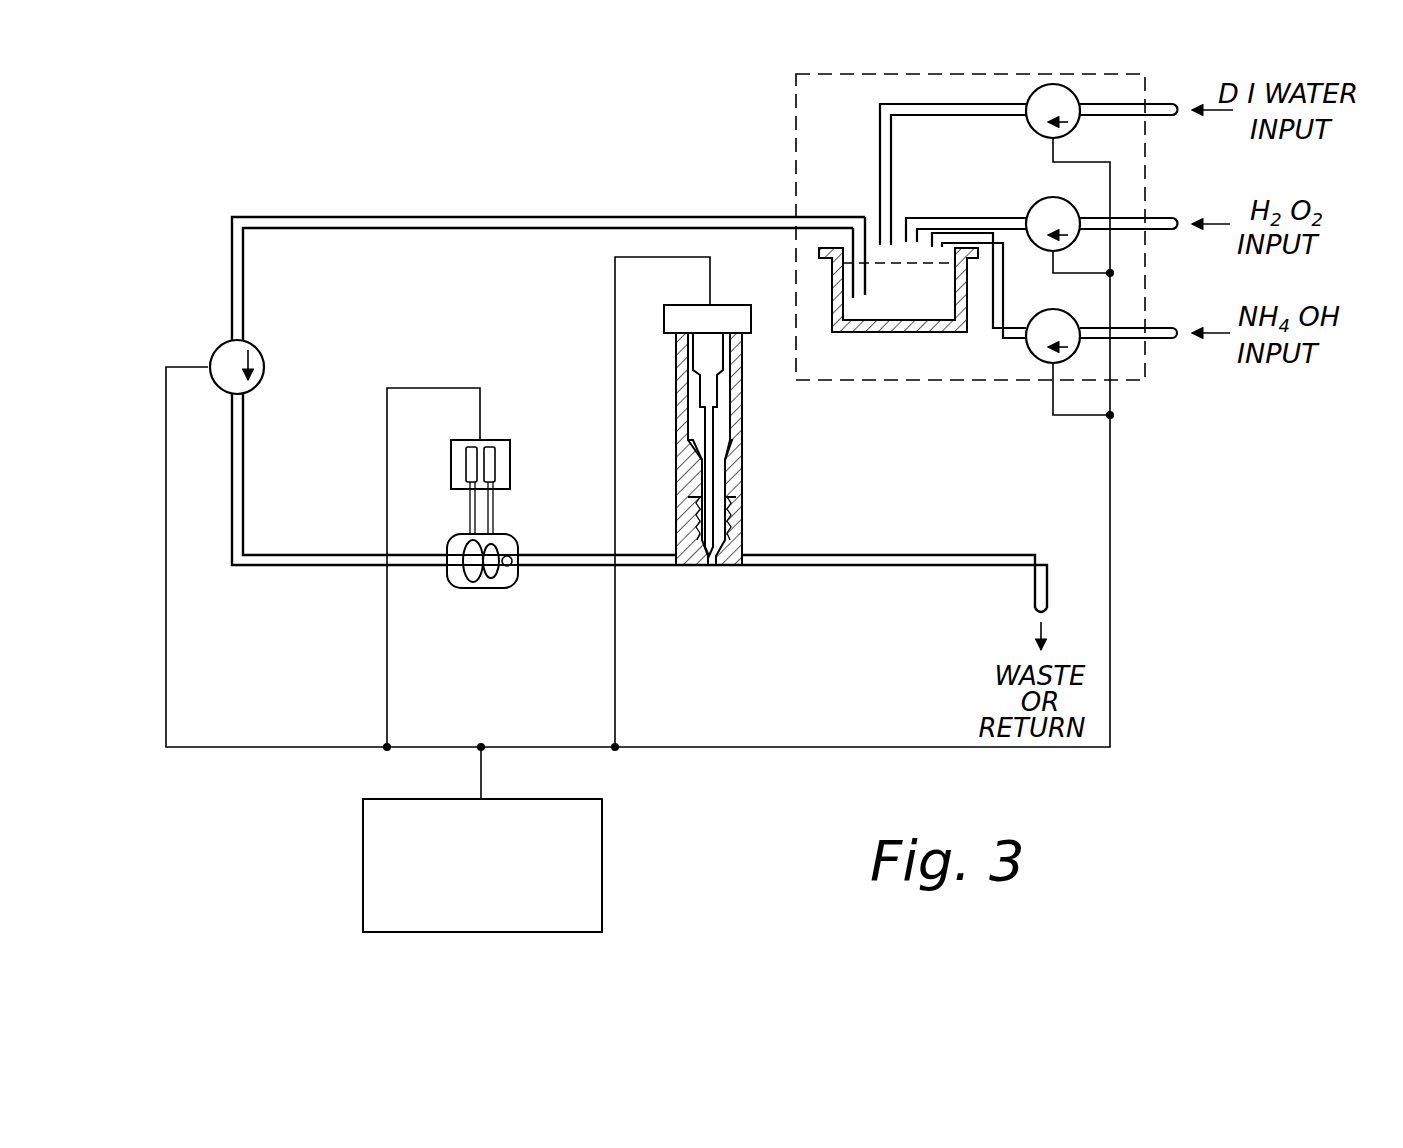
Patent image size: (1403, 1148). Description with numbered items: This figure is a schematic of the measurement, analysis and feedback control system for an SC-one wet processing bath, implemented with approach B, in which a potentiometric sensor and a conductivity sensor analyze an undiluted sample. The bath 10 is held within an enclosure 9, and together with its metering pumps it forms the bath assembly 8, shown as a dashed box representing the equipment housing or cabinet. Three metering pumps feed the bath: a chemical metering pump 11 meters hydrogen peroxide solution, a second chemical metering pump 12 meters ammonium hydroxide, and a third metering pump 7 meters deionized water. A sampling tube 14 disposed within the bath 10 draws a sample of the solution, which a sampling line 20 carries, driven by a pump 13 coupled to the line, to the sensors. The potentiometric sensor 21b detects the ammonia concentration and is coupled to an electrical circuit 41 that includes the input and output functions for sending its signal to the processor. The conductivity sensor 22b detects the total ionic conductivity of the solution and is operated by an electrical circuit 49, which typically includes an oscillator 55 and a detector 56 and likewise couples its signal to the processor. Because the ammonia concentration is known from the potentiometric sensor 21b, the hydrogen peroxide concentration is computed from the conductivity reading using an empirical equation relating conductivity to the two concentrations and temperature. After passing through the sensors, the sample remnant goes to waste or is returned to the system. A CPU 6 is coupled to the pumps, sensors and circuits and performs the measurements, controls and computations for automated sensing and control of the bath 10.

The CPU 6 is at (602, 862).
The metering pump 7 is at (1025, 122).
The bath assembly 8 is at (796, 120).
The enclosure 9 is at (870, 332).
The bath 10 is at (895, 260).
The chemical metering pump 11 is at (1035, 208).
The second chemical metering pump 12 is at (1050, 305).
The pump 13 is at (264, 355).
The sampling tube 14 is at (870, 227).
The sampling line 20 is at (576, 215).
The potentiometric sensor 21b is at (743, 476).
The conductivity sensor 22b is at (492, 588).
The electrical circuit 41 is at (742, 300).
The electrical circuit 49 is at (484, 465).
The oscillator 55 is at (466, 460).
The detector 56 is at (495, 465).